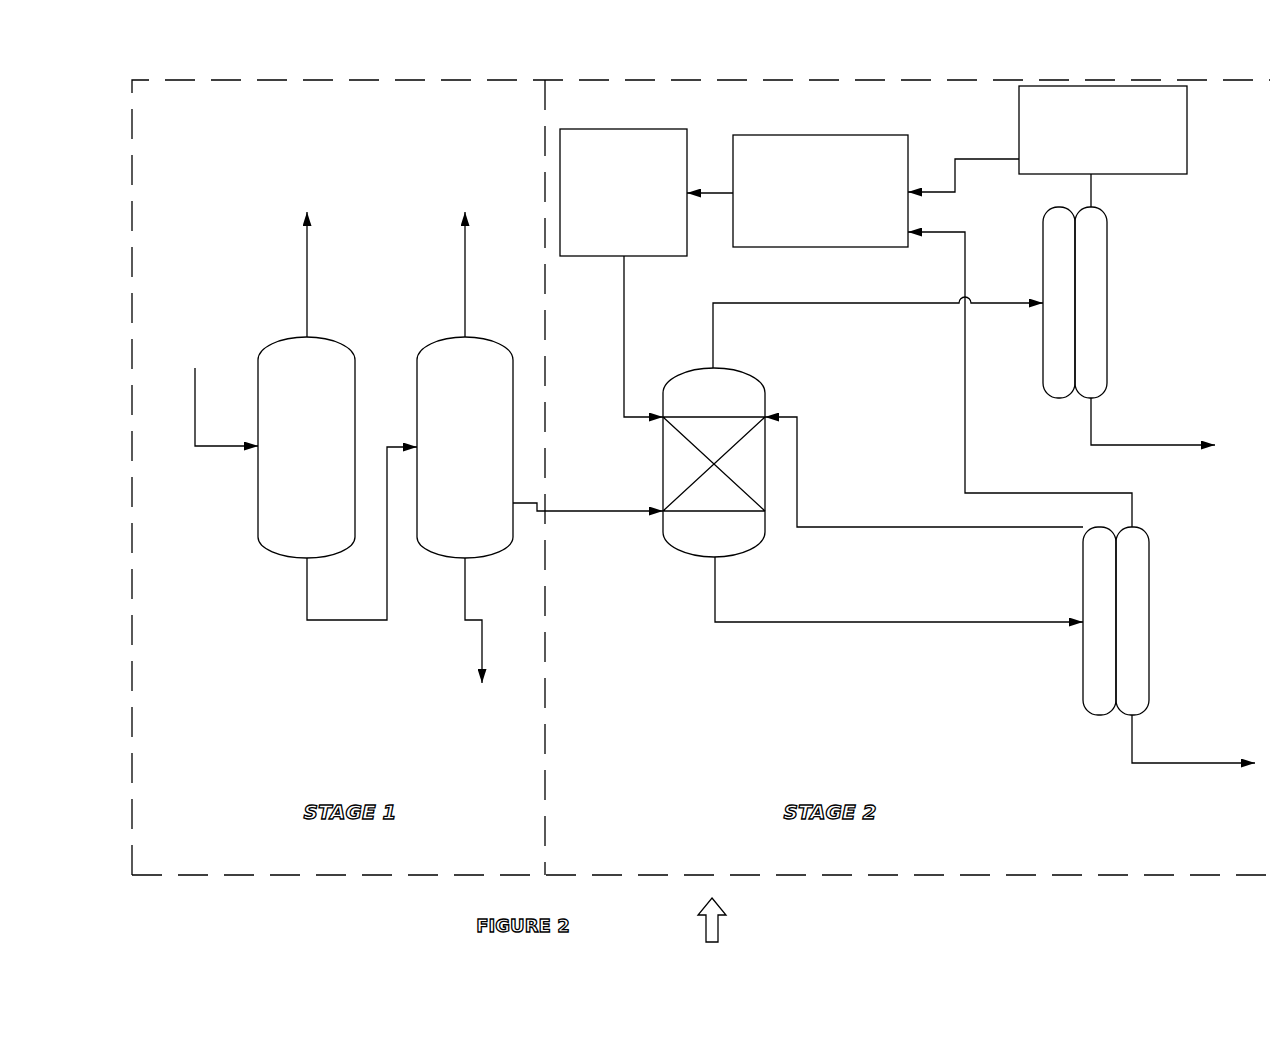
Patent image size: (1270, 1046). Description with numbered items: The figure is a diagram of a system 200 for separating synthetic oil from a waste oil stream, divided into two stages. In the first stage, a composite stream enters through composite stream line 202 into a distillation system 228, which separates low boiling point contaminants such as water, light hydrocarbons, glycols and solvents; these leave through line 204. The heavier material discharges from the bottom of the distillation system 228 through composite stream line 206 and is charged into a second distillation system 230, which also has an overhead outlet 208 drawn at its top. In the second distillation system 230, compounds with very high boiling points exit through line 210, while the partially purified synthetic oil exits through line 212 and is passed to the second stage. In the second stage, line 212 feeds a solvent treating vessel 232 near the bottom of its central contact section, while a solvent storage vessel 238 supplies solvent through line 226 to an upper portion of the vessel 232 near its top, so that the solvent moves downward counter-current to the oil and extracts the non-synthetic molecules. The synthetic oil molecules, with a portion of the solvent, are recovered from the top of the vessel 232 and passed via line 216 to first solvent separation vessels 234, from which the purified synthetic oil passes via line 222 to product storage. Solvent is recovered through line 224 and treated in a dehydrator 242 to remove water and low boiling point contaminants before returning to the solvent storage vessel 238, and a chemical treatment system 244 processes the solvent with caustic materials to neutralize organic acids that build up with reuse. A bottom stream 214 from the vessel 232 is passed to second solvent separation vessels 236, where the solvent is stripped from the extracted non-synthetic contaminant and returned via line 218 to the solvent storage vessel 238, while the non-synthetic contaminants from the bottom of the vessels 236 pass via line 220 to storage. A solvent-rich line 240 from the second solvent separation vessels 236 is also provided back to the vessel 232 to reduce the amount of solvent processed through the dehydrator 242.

The system 200 is at (683, 920).
The composite stream line 202 is at (228, 448).
The line 204 is at (306, 270).
The composite stream line 206 is at (338, 620).
The overhead stream from second distillation 208 is at (460, 276).
The line 210 is at (480, 628).
The line 212 is at (655, 518).
The bottom stream 214 is at (773, 625).
The line 216 is at (765, 300).
The line 218 is at (1005, 493).
The line 220 is at (1220, 762).
The line 222 is at (1193, 442).
The line 224 is at (988, 158).
The line 226 is at (640, 337).
The distillation system 228 is at (290, 525).
The second distillation system 230 is at (448, 525).
The solvent treating vessel 232 is at (697, 501).
The first solvent separation vessels 234 is at (1107, 277).
The second solvent separation vessels 236 is at (1083, 692).
The solvent storage vessel 238 is at (606, 216).
The line 240 is at (933, 528).
The dehydrator 242 is at (803, 216).
The chemical treatment system 244 is at (1103, 146).